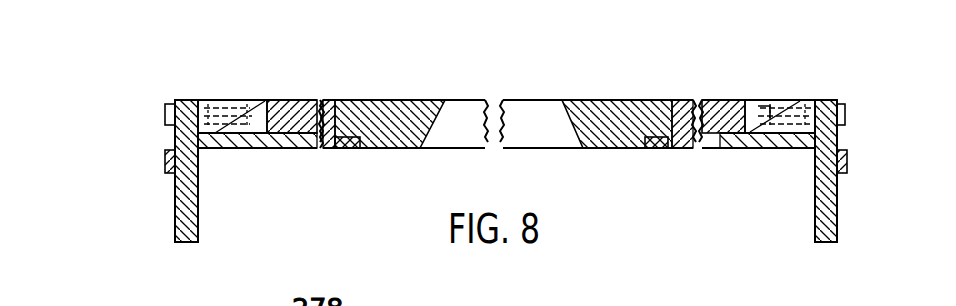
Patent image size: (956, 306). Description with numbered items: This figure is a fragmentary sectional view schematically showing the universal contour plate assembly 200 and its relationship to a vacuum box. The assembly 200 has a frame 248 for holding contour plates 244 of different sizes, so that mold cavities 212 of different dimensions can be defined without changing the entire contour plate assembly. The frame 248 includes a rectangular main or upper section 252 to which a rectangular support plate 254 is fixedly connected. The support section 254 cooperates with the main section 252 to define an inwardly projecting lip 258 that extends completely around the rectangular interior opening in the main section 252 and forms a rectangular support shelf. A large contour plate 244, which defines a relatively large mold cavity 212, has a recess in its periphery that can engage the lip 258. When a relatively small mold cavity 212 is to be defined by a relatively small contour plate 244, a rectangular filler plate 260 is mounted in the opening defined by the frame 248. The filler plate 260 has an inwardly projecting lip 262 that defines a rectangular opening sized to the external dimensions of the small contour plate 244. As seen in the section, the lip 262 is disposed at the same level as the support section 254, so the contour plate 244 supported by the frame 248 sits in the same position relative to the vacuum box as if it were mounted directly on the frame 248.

The universal contour plate assembly 200 is at (130, 172).
The mold cavity 212 is at (497, 103).
The contour plate 244 is at (438, 92).
The frame 248 is at (160, 100).
The main section 252 is at (247, 70).
The support plate 254 is at (256, 140).
The lip 258 is at (285, 138).
The filler plate 260 is at (322, 104).
The lip 262 is at (353, 146).